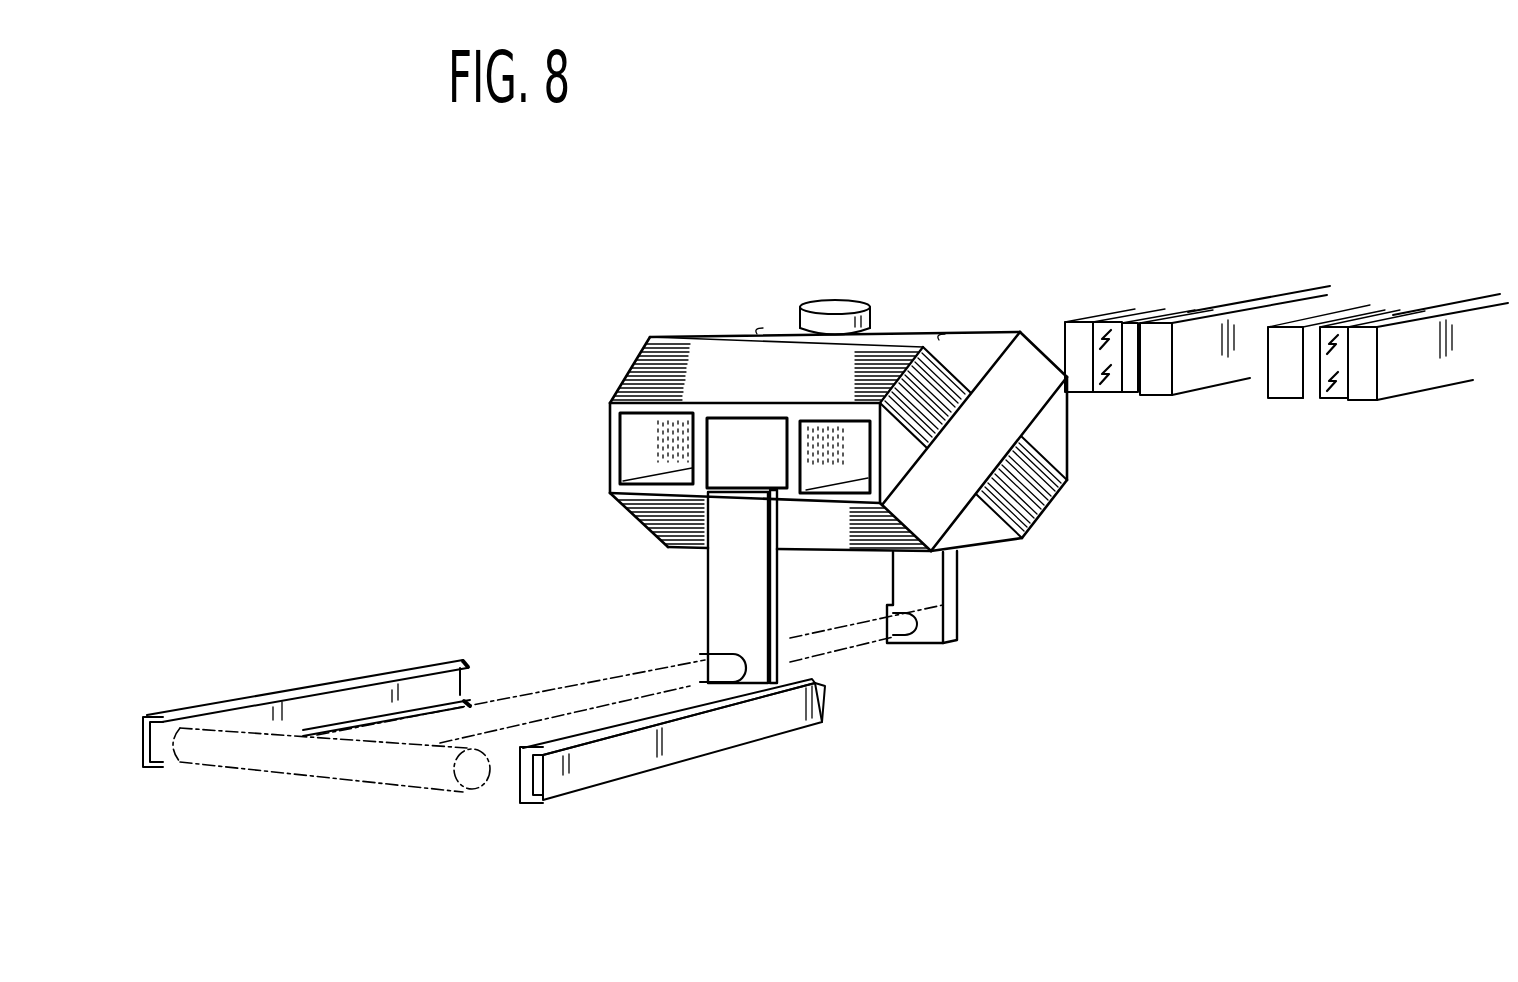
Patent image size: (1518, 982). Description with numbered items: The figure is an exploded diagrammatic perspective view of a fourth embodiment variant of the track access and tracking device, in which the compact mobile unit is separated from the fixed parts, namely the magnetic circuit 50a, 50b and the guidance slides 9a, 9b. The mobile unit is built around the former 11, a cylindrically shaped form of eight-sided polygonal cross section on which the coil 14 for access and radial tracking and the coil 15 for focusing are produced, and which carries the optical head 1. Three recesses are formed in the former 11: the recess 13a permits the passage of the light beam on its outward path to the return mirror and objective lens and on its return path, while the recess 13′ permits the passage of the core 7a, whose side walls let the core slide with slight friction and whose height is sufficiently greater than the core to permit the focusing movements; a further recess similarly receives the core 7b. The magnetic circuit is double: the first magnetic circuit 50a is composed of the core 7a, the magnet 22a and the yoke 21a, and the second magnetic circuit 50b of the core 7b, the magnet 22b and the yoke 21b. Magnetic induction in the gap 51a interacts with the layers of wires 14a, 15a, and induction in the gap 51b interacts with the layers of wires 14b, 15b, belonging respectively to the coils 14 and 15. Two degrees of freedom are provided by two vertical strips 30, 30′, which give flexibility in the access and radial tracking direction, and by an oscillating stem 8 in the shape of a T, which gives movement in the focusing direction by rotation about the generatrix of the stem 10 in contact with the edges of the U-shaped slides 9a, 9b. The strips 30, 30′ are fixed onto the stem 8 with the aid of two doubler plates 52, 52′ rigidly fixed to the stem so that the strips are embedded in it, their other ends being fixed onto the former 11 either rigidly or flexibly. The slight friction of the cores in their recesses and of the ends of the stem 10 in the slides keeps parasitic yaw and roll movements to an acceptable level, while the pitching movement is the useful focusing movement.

The optical head 1 is at (832, 300).
The former 11 is at (920, 323).
The coil 15 is at (700, 345).
The layer of wires 15a is at (1048, 508).
The layer of wires 15b is at (655, 368).
The coil 14 is at (833, 533).
The layer of wires 14a is at (1065, 321).
The layer of wires 14b is at (640, 527).
The recess 13a is at (720, 447).
The recess 13′ is at (847, 470).
The vertical strip 30′ is at (718, 598).
The vertical strip 30 is at (957, 577).
The doubler plate 52′ is at (848, 668).
The doubler plate 52 is at (937, 640).
The oscillating stem 8 is at (575, 693).
The stem 10 is at (400, 790).
The U-shaped slide 9a is at (717, 750).
The U-shaped slide 9b is at (397, 673).
The magnet 22b is at (1105, 393).
The yoke 21b is at (1106, 321).
The gap 51b is at (1128, 394).
The core 7b is at (1158, 396).
The second magnetic circuit 50b is at (1222, 308).
The core 7a is at (1287, 399).
The gap 51a is at (1311, 400).
The magnet 22a is at (1333, 400).
The yoke 21a is at (1368, 401).
The first magnetic circuit 50a is at (1393, 313).